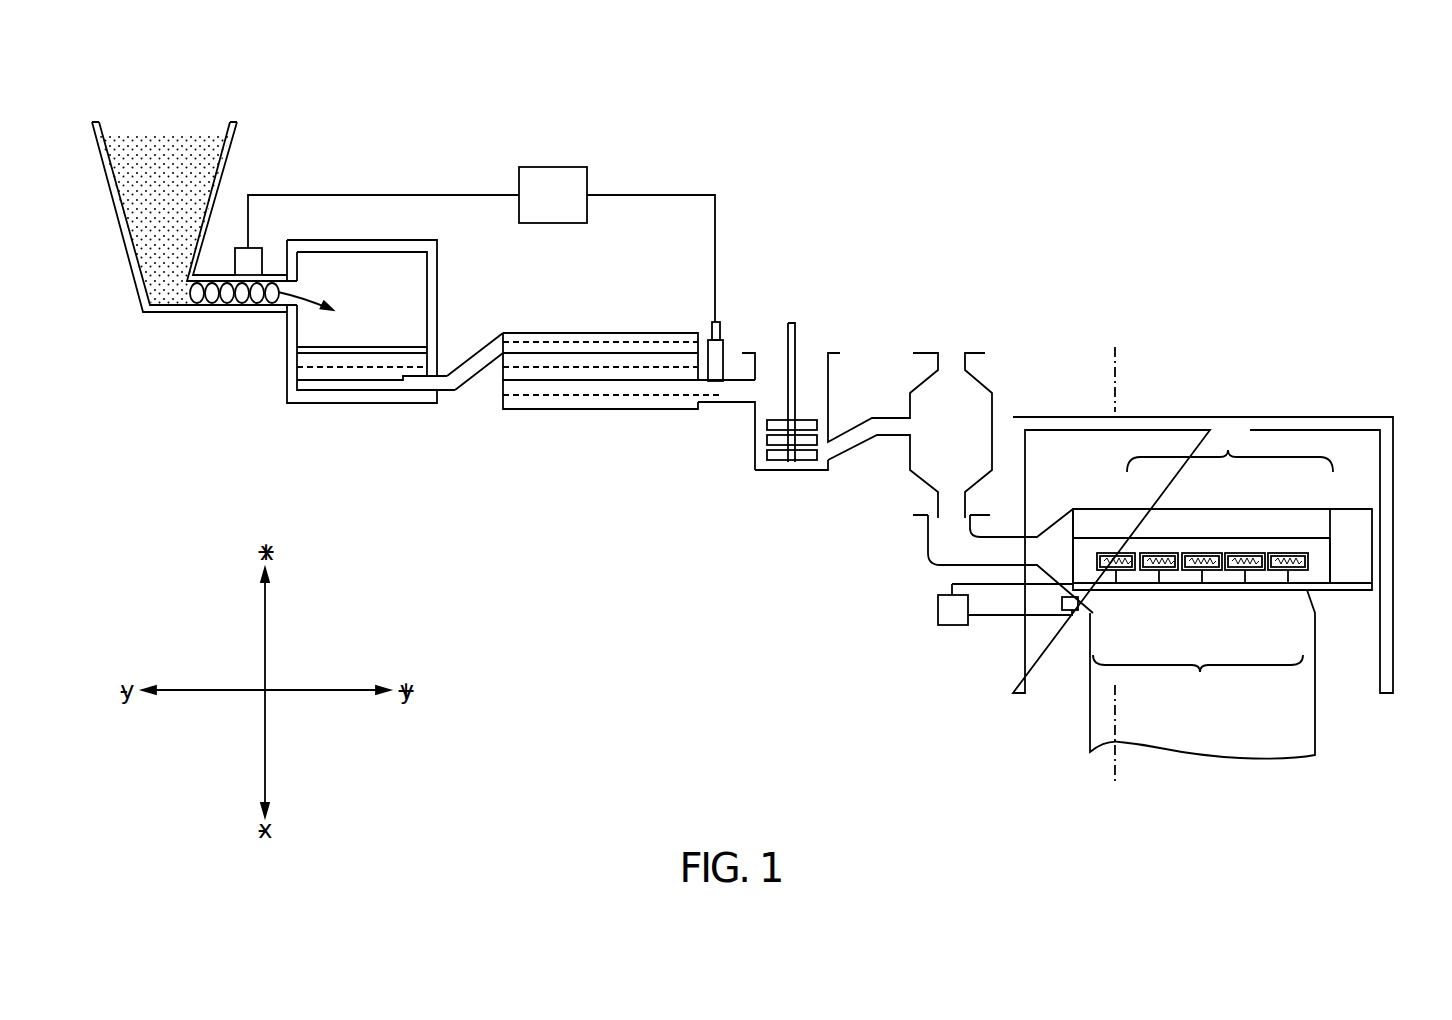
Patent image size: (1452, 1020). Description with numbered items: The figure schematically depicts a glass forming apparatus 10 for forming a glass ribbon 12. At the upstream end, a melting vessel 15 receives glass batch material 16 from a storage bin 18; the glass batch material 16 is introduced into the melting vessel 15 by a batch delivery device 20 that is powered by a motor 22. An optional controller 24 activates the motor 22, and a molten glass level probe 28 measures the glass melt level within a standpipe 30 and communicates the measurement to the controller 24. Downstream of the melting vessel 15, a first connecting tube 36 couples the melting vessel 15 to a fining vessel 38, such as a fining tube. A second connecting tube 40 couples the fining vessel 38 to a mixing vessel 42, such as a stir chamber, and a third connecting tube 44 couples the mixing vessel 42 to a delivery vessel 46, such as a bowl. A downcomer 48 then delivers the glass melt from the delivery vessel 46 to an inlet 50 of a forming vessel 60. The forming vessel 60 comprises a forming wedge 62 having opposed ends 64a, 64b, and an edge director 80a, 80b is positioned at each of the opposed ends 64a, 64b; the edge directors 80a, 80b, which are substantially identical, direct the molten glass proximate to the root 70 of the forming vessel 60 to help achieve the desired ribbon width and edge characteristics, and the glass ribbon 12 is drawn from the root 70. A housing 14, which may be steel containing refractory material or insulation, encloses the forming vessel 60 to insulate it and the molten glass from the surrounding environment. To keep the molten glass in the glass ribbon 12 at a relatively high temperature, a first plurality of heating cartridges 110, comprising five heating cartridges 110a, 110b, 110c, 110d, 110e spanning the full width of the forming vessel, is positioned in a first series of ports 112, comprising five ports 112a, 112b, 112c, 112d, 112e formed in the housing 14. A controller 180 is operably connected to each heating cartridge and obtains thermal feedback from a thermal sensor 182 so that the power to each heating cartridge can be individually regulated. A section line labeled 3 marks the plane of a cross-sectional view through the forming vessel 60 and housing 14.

The glass forming apparatus 10 is at (980, 199).
The glass ribbon 12 is at (1090, 713).
The housing 14 is at (1352, 413).
The melting vessel 15 is at (328, 403).
The glass batch material 16 is at (172, 122).
The storage bin 18 is at (121, 240).
The batch delivery device 20 is at (227, 306).
The motor 22 is at (255, 245).
The controller 24 is at (550, 167).
The molten glass level probe 28 is at (712, 327).
The standpipe 30 is at (721, 350).
The first connecting tube 36 is at (475, 356).
The fining vessel 38 is at (582, 333).
The second connecting tube 40 is at (728, 403).
The mixing vessel 42 is at (830, 385).
The third connecting tube 44 is at (847, 455).
The delivery vessel 46 is at (992, 410).
The downcomer 48 is at (937, 502).
The inlet 50 is at (928, 535).
The forming vessel 60 is at (1290, 452).
The forming wedge 62 is at (1098, 480).
The first opposed end of forming wedge 64a is at (1088, 527).
The second opposed end of forming wedge 64b is at (1327, 525).
The root 70 is at (1142, 604).
The first edge director 80a is at (1085, 548).
The second edge director 80b is at (1315, 546).
The first plurality of heating cartridges 110 is at (1198, 681).
The first heating cartridge 110a is at (1127, 571).
The second heating cartridge 110b is at (1168, 568).
The third heating cartridge 110c is at (1213, 568).
The fourth heating cartridge 110d is at (1257, 568).
The fifth heating cartridge 110e is at (1300, 568).
The first series of ports 112 is at (1230, 447).
The first port 112a is at (1112, 552).
The second port 112b is at (1152, 552).
The third port 112c is at (1197, 552).
The fourth port 112d is at (1242, 552).
The fifth port 112e is at (1285, 552).
The controller 180 is at (937, 612).
The thermal sensor 182 is at (1078, 612).
The section line 3- 3 is at (1113, 347).